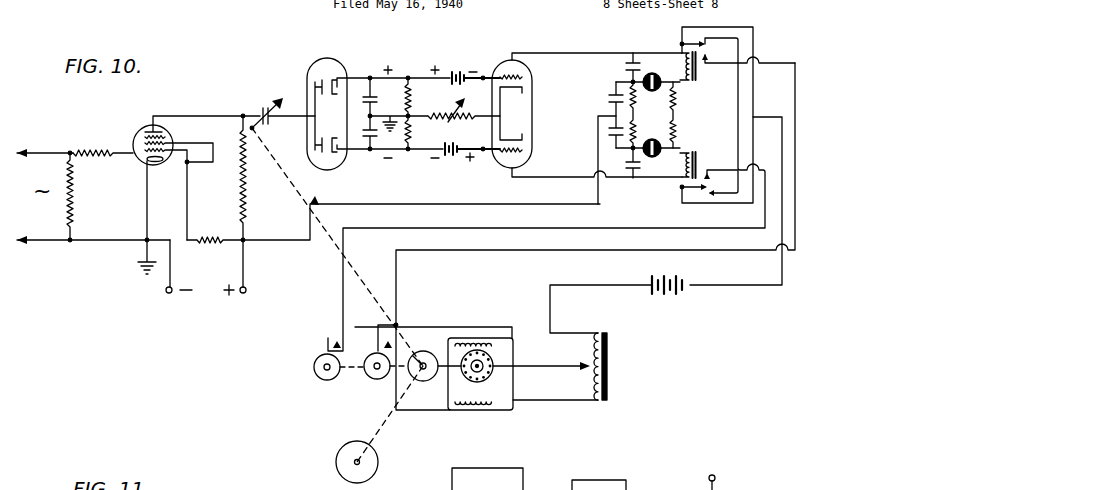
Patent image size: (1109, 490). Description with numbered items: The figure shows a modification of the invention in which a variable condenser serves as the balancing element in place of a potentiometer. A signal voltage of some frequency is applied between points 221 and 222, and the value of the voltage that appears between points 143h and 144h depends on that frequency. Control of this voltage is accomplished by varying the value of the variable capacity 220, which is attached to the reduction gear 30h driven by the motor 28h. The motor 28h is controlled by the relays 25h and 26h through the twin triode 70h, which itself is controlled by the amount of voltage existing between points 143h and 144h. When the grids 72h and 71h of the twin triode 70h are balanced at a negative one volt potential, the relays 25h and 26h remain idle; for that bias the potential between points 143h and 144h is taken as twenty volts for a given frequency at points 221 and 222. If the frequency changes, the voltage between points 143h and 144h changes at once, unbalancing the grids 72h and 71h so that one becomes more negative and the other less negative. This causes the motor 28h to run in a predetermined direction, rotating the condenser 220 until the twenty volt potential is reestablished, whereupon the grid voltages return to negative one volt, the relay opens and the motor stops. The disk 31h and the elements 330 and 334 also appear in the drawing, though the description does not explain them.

In FIG. 10, the variable capacity 220 is at (277, 110).
In FIG. 10, the point 221 is at (75, 144).
In FIG. 10, the point 222 is at (93, 233).
In FIG. 10, the point 143h is at (483, 78).
In FIG. 10, the point 144h is at (483, 149).
In FIG. 10, the twin triode 70h is at (532, 95).
In FIG. 10, the grid 71h is at (522, 150).
In FIG. 10, the grid 72h is at (522, 77).
In FIG. 10, the relay 25h is at (697, 68).
In FIG. 10, the relay 26h is at (698, 166).
In FIG. 10, the motor 28h is at (492, 372).
In FIG. 10, the reduction gear 30h is at (425, 381).
In FIG. 10, the disk 31h is at (378, 467).
In FIG. 11, the throttle 330 is at (523, 468).
In FIG. 11, the control box 334 is at (617, 483).